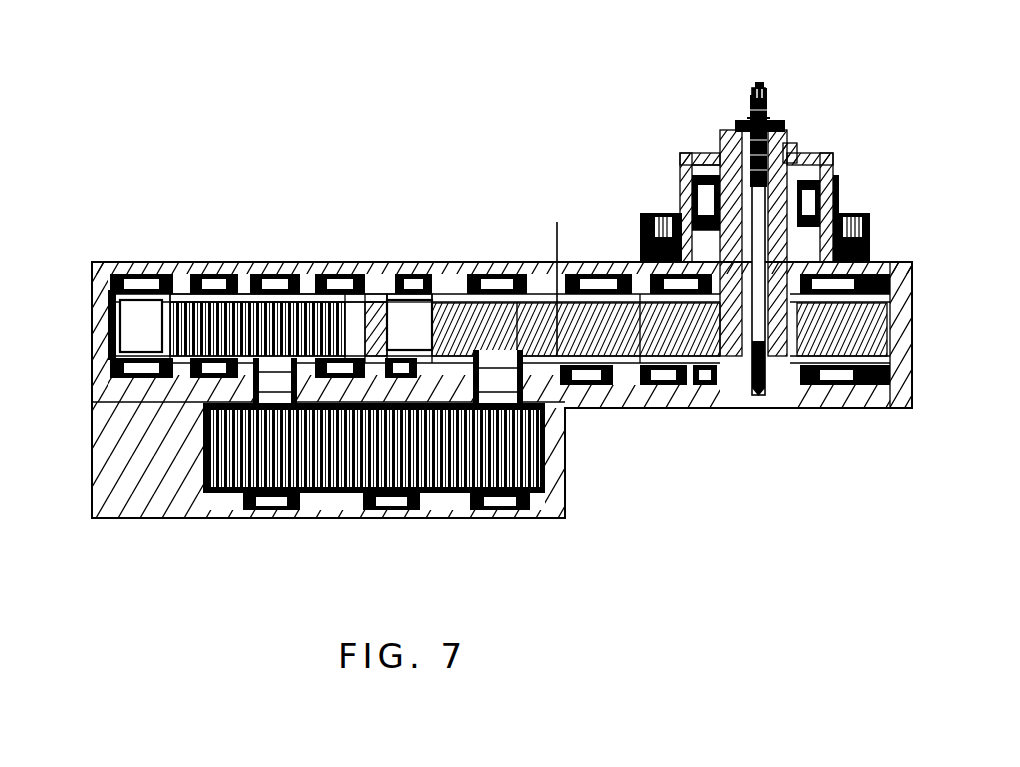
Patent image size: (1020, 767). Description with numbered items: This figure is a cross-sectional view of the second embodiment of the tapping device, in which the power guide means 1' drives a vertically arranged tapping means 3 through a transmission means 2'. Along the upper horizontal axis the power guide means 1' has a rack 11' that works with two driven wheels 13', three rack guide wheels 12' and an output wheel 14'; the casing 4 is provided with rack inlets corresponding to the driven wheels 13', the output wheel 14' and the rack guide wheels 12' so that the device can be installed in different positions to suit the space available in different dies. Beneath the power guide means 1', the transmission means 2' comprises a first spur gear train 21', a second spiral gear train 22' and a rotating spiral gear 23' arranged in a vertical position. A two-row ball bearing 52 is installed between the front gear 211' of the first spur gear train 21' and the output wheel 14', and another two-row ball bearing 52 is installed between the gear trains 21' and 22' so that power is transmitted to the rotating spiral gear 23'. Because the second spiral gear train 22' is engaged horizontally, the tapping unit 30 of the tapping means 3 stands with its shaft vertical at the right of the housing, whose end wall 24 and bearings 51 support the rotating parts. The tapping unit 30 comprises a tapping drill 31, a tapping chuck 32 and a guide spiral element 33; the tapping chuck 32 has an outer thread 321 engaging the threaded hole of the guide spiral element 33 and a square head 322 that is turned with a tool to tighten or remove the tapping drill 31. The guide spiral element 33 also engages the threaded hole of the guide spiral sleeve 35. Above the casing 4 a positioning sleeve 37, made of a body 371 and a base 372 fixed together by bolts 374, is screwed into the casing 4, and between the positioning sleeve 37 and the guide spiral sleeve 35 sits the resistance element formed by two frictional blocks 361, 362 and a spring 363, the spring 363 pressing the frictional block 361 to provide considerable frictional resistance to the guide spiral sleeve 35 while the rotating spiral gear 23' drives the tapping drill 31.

The power guide means 1' is at (76, 322).
The transmission means 2' is at (342, 513).
The rack 11' is at (409, 251).
The rack guide wheels 12' is at (263, 287).
The driven wheels 13' is at (278, 279).
The output wheel 14' is at (257, 273).
The first spur gear train 21' is at (375, 516).
The front gear 211' is at (177, 499).
The second spiral gear train 22' is at (546, 275).
The rotating spiral gear 23' is at (659, 388).
The housing end wall 24 is at (893, 264).
The tapping means 3 is at (845, 150).
The tapping unit 30 is at (783, 128).
The tapping drill 31 is at (757, 397).
The tapping chuck 32 is at (738, 113).
The outer thread 321 is at (750, 110).
The square head 322 is at (662, 42).
The guide spiral element 33 is at (735, 127).
The guide spiral sleeve 35 is at (786, 150).
The frictional block 361 is at (683, 160).
The frictional block 362 is at (683, 230).
The spring 363 is at (692, 195).
The positioning sleeve 37 is at (680, 158).
The body 371 is at (645, 262).
The base 372 is at (645, 248).
The bolts 374 is at (856, 163).
The casing 4 is at (849, 406).
The bearing 51 is at (876, 212).
The two-row ball bearing 52 is at (70, 460).